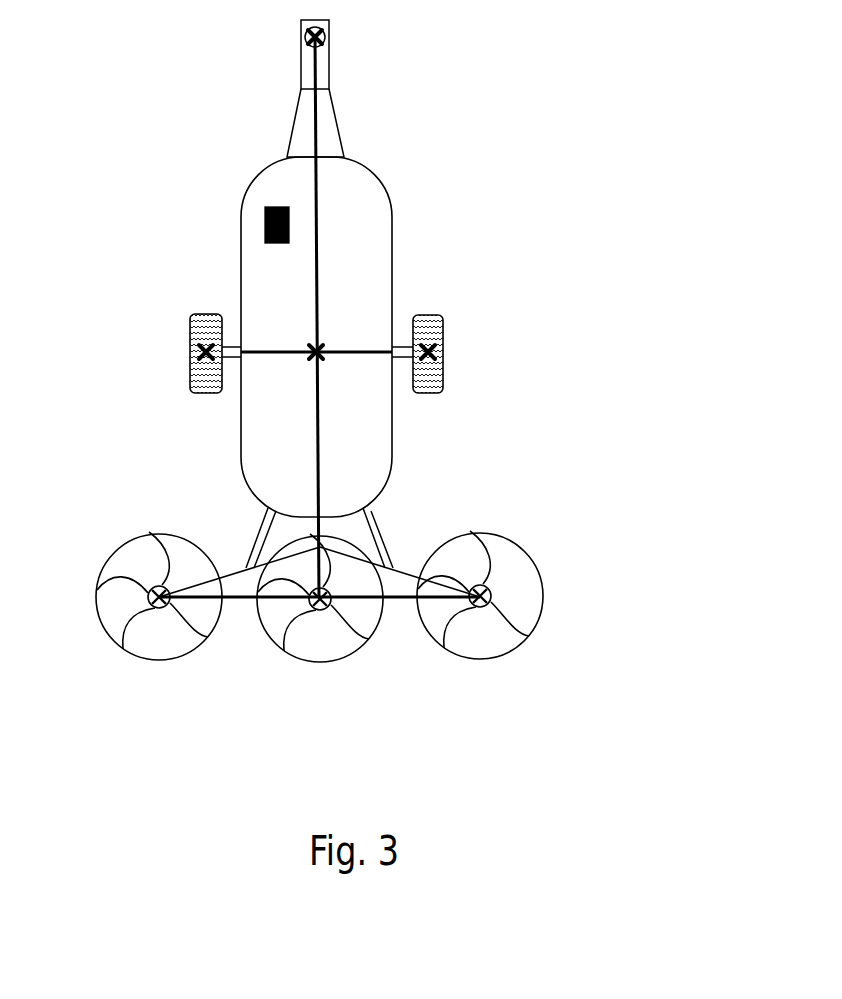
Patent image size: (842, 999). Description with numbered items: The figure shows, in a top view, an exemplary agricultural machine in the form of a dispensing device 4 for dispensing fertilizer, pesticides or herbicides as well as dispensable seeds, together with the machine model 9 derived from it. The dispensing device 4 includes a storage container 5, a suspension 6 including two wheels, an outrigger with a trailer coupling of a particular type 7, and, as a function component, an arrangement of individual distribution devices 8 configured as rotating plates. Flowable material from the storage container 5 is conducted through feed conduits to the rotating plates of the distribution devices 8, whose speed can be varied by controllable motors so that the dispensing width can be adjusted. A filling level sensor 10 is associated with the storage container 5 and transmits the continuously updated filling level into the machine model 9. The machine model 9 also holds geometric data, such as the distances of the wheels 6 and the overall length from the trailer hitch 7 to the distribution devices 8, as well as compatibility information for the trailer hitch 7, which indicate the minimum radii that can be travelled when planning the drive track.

The dispensing device 4 is at (440, 188).
The storage container 5 is at (378, 448).
The suspension including two wheels 6 is at (190, 323).
The outrigger with trailer coupling 7 is at (330, 22).
The distribution devices 8 is at (128, 553).
The machine model 9 is at (318, 210).
The filling level sensor 10 is at (265, 213).